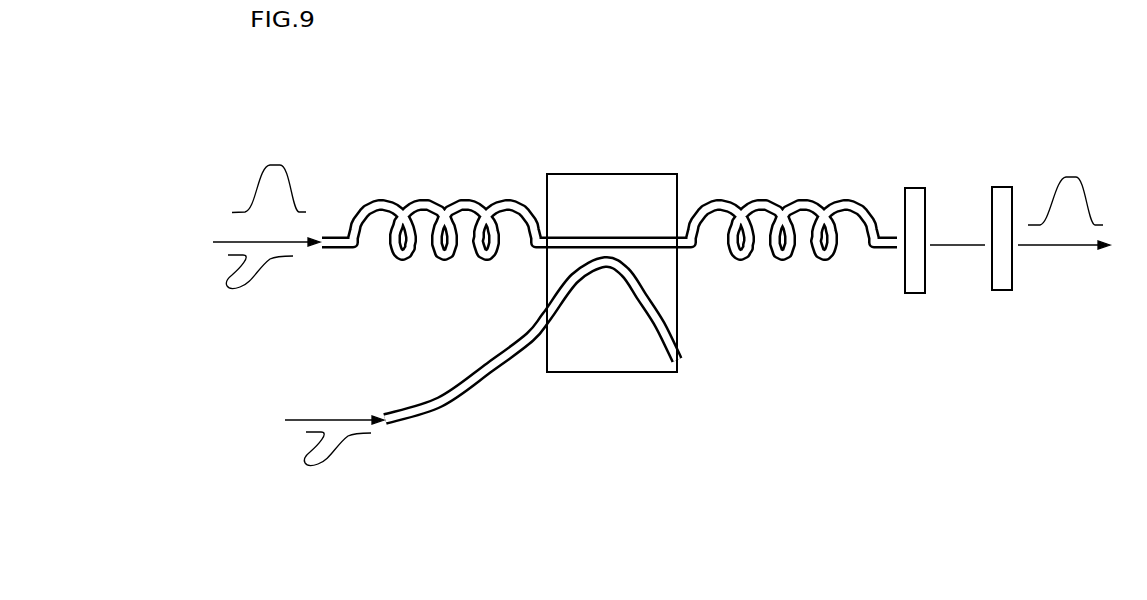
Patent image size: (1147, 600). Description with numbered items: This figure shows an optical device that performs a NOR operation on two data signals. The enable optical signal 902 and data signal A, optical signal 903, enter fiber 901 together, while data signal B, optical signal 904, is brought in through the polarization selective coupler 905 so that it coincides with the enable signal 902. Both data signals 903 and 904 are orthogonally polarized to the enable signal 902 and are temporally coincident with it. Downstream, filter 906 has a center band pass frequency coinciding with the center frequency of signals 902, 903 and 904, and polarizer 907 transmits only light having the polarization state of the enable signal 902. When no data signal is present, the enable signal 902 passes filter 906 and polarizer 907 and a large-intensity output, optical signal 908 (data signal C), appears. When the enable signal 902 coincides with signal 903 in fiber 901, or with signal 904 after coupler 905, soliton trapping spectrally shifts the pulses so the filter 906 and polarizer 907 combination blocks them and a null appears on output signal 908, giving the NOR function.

The fiber 901 is at (355, 248).
The optical signal (enable signal) 902 is at (275, 168).
The optical signal (data signal A) 903 is at (266, 291).
The optical signal (data signal B) 904 is at (330, 468).
The polarization selective coupler 905 is at (666, 176).
The filter 906 is at (905, 284).
The polarizer 907 is at (992, 190).
The optical signal (data signal C) 908 is at (1073, 193).